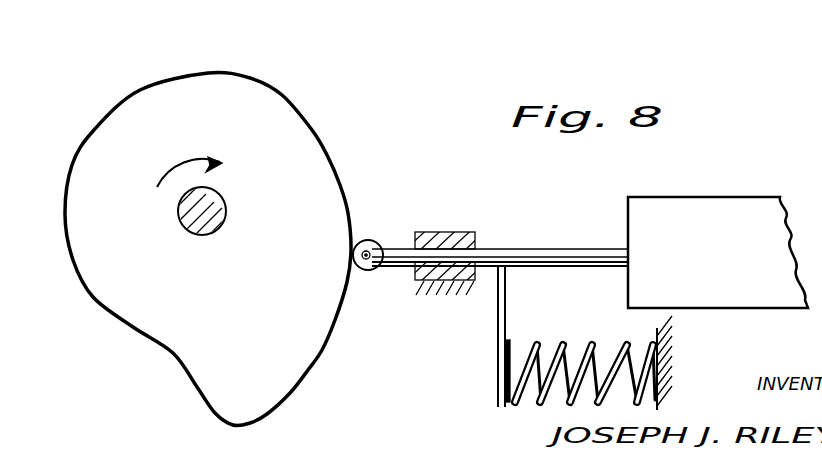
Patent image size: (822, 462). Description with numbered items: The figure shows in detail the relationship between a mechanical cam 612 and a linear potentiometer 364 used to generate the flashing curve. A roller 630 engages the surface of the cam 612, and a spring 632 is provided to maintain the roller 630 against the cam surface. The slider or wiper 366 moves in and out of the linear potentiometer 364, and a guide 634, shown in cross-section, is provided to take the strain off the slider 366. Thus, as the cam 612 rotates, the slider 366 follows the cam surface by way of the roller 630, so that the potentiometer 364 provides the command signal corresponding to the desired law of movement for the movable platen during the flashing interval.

The mechanical cam 612 is at (284, 66).
The roller 630 is at (368, 240).
The guide 634 is at (418, 270).
The slider 366 is at (585, 260).
The linear potentiometer 364 is at (717, 208).
The spring 632 is at (598, 343).